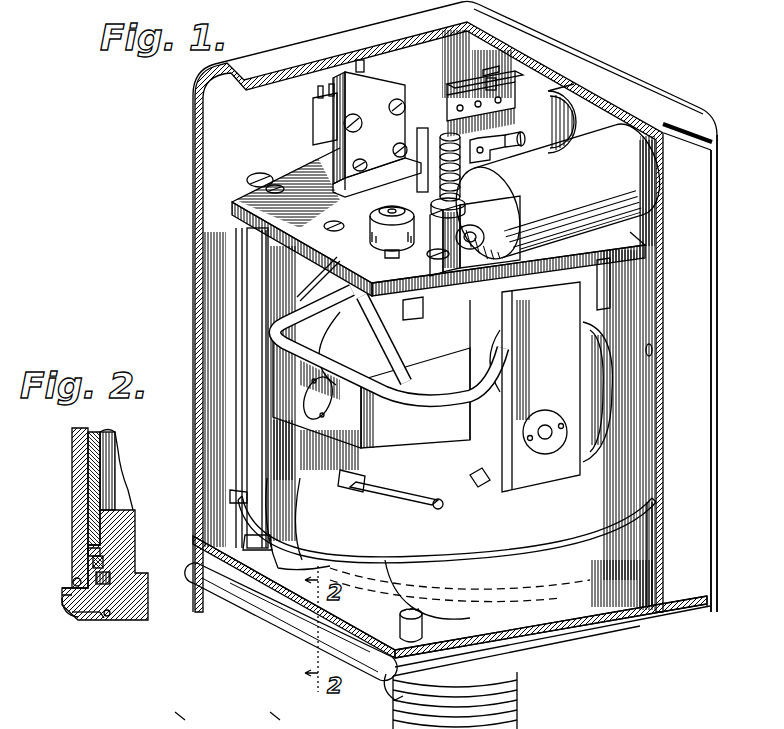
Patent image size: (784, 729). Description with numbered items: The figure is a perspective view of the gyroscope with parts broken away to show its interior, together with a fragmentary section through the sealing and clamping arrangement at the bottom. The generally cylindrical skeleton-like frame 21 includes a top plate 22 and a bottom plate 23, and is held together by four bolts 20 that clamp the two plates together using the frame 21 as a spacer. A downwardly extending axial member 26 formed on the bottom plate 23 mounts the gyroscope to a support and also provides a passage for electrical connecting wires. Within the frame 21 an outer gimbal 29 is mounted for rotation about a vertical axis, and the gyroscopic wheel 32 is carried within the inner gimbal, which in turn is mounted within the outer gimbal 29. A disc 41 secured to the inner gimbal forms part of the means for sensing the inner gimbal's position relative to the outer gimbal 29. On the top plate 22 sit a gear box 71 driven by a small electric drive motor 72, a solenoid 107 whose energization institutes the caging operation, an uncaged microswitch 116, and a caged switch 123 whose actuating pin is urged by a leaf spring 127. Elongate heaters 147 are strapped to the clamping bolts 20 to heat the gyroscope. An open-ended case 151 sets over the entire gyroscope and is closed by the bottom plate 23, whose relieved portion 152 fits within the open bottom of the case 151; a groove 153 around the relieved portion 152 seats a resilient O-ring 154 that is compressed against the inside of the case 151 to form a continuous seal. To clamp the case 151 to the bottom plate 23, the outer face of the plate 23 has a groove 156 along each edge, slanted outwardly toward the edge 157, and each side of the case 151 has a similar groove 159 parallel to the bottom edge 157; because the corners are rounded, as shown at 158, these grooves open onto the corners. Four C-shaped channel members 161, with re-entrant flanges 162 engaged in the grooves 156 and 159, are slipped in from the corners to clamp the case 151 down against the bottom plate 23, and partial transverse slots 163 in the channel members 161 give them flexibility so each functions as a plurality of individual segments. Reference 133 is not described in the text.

In FIG. 1, the bolts 20 is at (266, 175).
In FIG. 1, the frame 21 is at (447, 548).
In FIG. 2, the frame 21 is at (95, 455).
In FIG. 1, the top plate 22 is at (233, 205).
In FIG. 1, the bottom plate 23 is at (440, 642).
In FIG. 2, the bottom plate 23 is at (140, 604).
In FIG. 1, the axial member 26 is at (495, 700).
In FIG. 1, the outer gimbal 29 is at (557, 375).
In FIG. 1, the gyroscopic wheel 32 is at (389, 345).
In FIG. 1, the disc 41 is at (323, 285).
In FIG. 1, the gear box 71 is at (378, 216).
In FIG. 1, the electric drive motor 72 is at (558, 192).
In FIG. 1, the solenoid 107 is at (574, 100).
In FIG. 1, the uncaged microswitch 116 is at (452, 98).
In FIG. 1, the caged switch 123 is at (330, 111).
In FIG. 1, the leaf spring 127 is at (169, 720).
In FIG. 1, the part 133 is at (266, 720).
In FIG. 1, the heaters 147 is at (247, 342).
In FIG. 1, the case 151 is at (690, 418).
In FIG. 2, the case 151 is at (72, 440).
In FIG. 2, the relieved portion 152 is at (93, 560).
In FIG. 2, the groove 153 is at (103, 563).
In FIG. 1, the O-ring 154 is at (594, 622).
In FIG. 2, the O-ring 154 is at (110, 578).
In FIG. 2, the groove 156 is at (112, 618).
In FIG. 2, the edge 157 is at (66, 616).
In FIG. 1, the rounded corner 158 is at (388, 690).
In FIG. 1, the groove 159 is at (703, 597).
In FIG. 2, the groove 159 is at (73, 580).
In FIG. 1, the channel members 161 is at (247, 600).
In FIG. 2, the channel members 161 is at (84, 620).
In FIG. 1, the re-entrant flanges 162 is at (523, 637).
In FIG. 2, the re-entrant flanges 162 is at (66, 594).
In FIG. 1, the transverse slots 163 is at (290, 618).
In FIG. 2, the transverse slots 163 is at (103, 620).